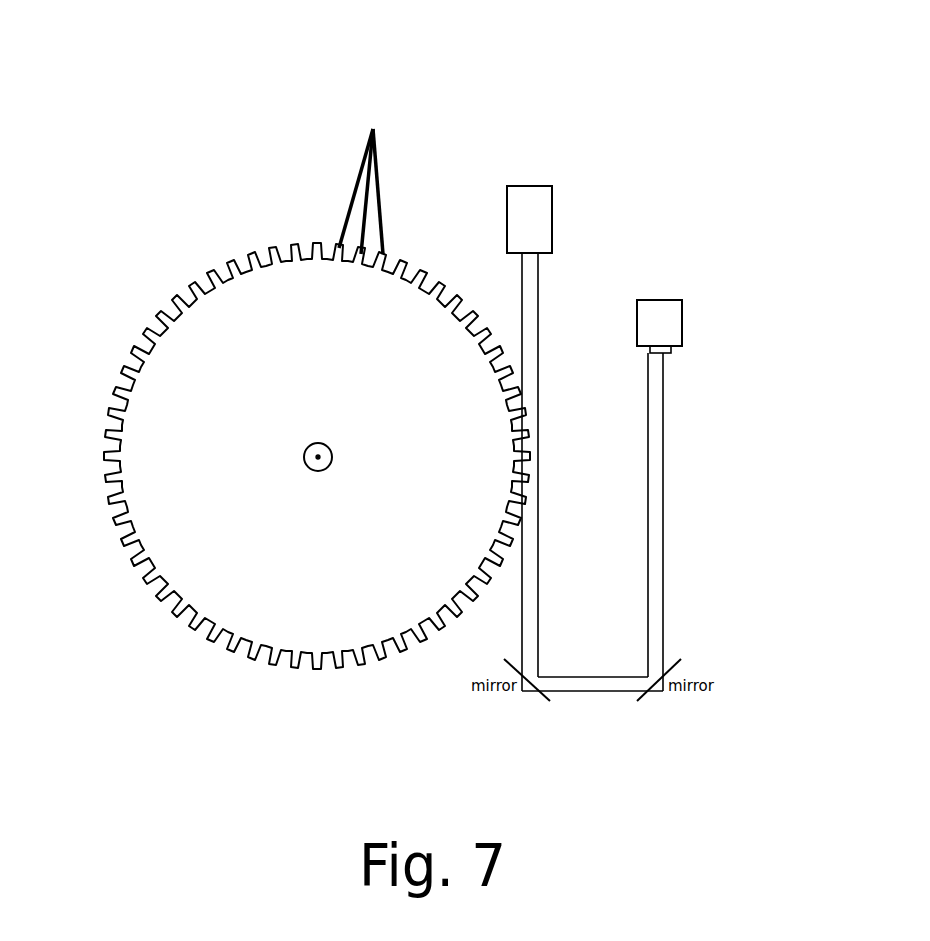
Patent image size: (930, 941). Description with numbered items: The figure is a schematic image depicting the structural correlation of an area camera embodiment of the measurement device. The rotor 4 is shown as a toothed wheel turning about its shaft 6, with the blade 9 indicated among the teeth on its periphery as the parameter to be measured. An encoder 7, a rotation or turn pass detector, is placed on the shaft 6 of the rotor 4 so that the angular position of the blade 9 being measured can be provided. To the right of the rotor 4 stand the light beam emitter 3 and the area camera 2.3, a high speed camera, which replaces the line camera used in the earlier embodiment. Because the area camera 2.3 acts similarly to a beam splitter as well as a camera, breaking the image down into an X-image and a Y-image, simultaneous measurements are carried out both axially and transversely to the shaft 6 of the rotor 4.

The area camera 2.3 is at (661, 323).
The light beam emitter 3 is at (533, 207).
The rotor 4 is at (275, 585).
The shaft 6 is at (317, 456).
The encoder 7 is at (313, 441).
The blade 9 is at (362, 169).